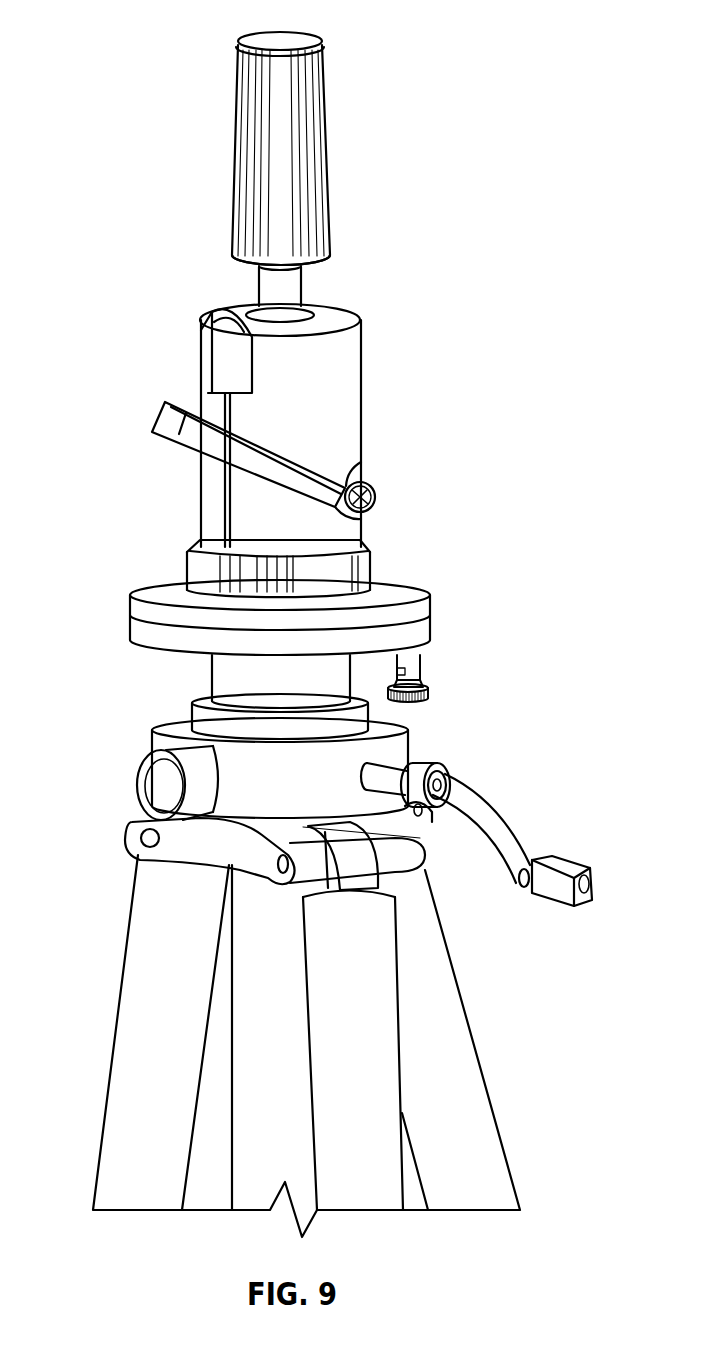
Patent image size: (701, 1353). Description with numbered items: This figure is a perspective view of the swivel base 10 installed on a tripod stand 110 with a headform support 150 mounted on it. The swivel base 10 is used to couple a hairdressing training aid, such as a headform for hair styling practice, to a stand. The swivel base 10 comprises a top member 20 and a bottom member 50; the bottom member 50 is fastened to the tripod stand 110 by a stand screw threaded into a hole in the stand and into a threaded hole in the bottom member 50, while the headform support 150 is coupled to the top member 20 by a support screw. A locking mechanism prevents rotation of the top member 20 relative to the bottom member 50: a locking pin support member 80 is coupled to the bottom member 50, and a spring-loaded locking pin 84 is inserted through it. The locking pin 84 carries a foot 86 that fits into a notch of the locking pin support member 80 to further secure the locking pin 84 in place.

The swivel base 10 is at (446, 603).
The top member 20 is at (403, 592).
The bottom member 50 is at (137, 637).
The locking pin support member 80 is at (413, 660).
The locking pin 84 is at (427, 692).
The foot 86 is at (417, 680).
The tripod stand 110 is at (430, 763).
The headform support 150 is at (320, 412).